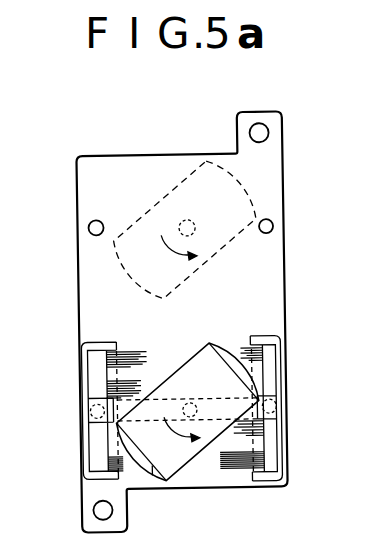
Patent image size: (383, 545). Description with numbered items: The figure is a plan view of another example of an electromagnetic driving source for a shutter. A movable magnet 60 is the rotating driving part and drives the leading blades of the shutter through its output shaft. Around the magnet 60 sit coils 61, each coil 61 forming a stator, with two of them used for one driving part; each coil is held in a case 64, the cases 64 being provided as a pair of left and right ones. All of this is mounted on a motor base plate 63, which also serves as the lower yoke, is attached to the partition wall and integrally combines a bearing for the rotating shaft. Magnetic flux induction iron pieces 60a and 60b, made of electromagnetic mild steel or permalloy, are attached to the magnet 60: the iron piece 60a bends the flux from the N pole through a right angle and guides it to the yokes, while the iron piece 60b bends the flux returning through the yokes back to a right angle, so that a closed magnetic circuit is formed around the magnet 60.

The movable magnet 60 is at (170, 388).
The magnetic flux induction iron piece 60a is at (152, 478).
The magnetic flux induction iron piece 60b is at (238, 376).
The coil 61 is at (270, 440).
The motor base plate 63 is at (88, 496).
The case 64 is at (82, 408).